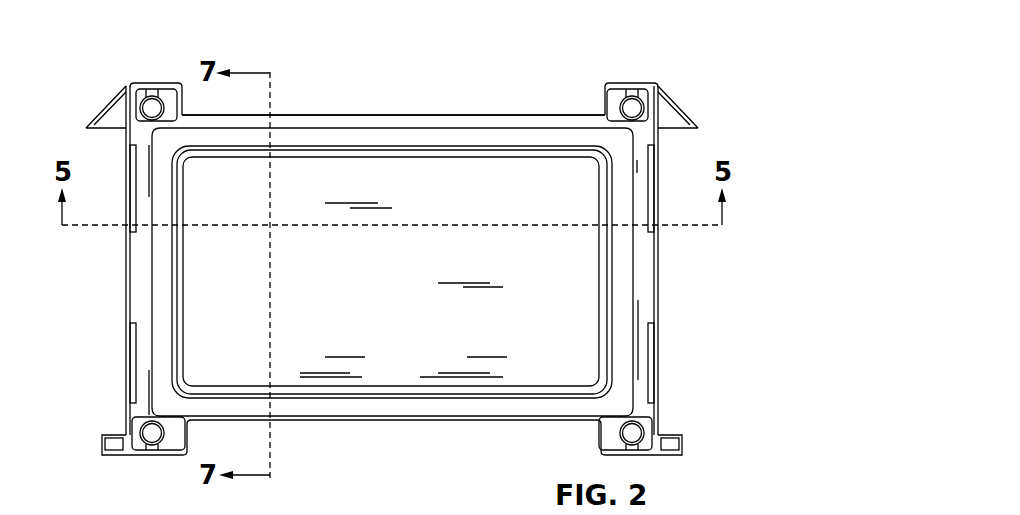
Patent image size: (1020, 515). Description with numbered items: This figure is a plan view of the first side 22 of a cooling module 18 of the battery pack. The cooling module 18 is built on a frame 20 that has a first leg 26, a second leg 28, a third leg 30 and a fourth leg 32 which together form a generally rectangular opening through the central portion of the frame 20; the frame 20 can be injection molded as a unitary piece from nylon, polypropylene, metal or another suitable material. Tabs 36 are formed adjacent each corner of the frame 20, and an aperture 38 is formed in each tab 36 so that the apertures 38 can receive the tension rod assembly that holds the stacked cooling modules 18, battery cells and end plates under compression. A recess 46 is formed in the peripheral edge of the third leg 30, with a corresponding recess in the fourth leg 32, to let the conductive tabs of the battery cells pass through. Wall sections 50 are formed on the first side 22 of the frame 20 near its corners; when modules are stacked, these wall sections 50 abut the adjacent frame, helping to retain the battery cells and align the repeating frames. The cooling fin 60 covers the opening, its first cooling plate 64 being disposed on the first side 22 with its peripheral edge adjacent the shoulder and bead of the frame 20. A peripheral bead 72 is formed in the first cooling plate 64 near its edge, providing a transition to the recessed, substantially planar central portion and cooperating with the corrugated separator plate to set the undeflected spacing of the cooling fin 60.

The cooling module 18 is at (677, 71).
The frame 20 is at (553, 117).
The first side 22 is at (195, 118).
The first leg 26 is at (400, 116).
The second leg 28 is at (390, 422).
The third leg 30 is at (127, 350).
The fourth leg 32 is at (658, 353).
The tabs 36 is at (131, 86).
The aperture 38 is at (150, 95).
The recess 46 is at (127, 276).
The wall sections 50 is at (131, 187).
The cooling fin 60 is at (460, 129).
The first cooling plate 64 is at (362, 178).
The peripheral bead 72 is at (303, 155).